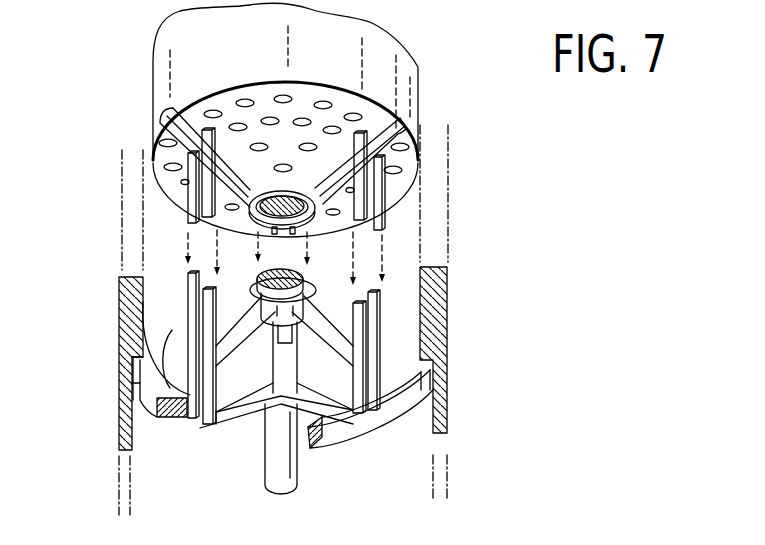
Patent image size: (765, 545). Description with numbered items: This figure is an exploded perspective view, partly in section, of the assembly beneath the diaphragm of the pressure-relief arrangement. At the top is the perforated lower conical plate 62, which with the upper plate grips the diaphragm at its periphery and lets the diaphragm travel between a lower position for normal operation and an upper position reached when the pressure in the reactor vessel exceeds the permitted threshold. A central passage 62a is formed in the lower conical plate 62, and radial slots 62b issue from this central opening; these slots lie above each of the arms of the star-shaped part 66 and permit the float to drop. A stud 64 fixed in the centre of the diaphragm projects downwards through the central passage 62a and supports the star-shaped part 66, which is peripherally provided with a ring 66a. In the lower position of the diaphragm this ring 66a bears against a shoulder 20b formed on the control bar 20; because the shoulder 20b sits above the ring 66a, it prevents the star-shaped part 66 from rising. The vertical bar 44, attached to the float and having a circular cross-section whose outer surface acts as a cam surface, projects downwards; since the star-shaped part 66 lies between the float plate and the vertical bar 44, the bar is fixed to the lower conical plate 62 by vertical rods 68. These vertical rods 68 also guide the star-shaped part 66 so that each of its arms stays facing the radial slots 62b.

The lower conical plate 62 is at (172, 52).
The radial slots 62b is at (176, 112).
The central passage 62a is at (268, 226).
The stud 64 is at (303, 281).
The vertical rods 68 is at (206, 316).
The star-shaped part 66 is at (384, 356).
The ring 66a is at (388, 422).
The control bar 20 is at (450, 167).
The shoulder 20b is at (131, 383).
The vertical bar 44 is at (277, 462).